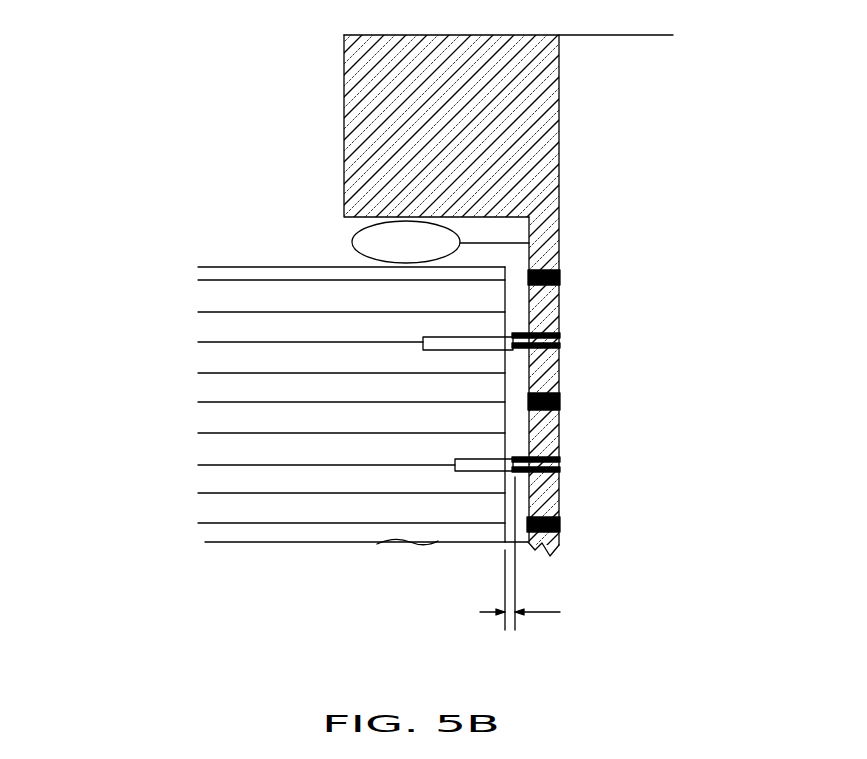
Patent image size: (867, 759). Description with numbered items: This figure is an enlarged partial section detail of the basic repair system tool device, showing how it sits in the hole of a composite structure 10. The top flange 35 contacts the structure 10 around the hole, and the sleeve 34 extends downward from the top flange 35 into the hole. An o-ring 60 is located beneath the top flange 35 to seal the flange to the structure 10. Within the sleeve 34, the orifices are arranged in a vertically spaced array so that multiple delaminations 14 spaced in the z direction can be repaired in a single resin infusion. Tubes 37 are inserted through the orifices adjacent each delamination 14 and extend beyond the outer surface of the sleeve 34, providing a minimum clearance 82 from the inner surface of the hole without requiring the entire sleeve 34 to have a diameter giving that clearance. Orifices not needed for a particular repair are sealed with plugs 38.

The structure 10 is at (224, 266).
The delaminations 14 is at (437, 342).
The sleeve 34 is at (558, 300).
The top flange 35 is at (379, 97).
The tubes 37 is at (560, 332).
The plugs 38 is at (561, 270).
The o-rings 60 is at (375, 243).
The minimum clearance 82 is at (560, 612).